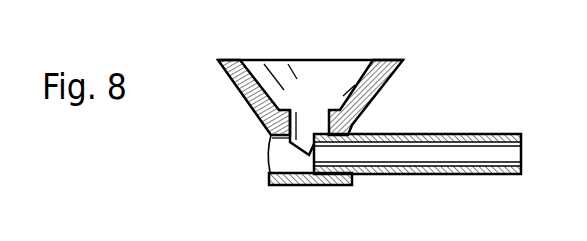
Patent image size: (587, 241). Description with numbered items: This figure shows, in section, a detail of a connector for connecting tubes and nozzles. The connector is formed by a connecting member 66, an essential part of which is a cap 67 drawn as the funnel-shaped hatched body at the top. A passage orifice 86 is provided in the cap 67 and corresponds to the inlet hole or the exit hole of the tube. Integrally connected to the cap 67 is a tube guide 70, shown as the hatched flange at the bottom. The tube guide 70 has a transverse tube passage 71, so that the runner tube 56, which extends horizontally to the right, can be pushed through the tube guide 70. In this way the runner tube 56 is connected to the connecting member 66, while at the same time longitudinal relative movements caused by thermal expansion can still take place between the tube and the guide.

The connecting member 66 is at (250, 54).
The cap 67 is at (372, 72).
The passage orifice 86 is at (313, 113).
The transverse tube passage 71 is at (285, 158).
The tube guide 70 is at (303, 186).
The runner tube 56 is at (475, 175).